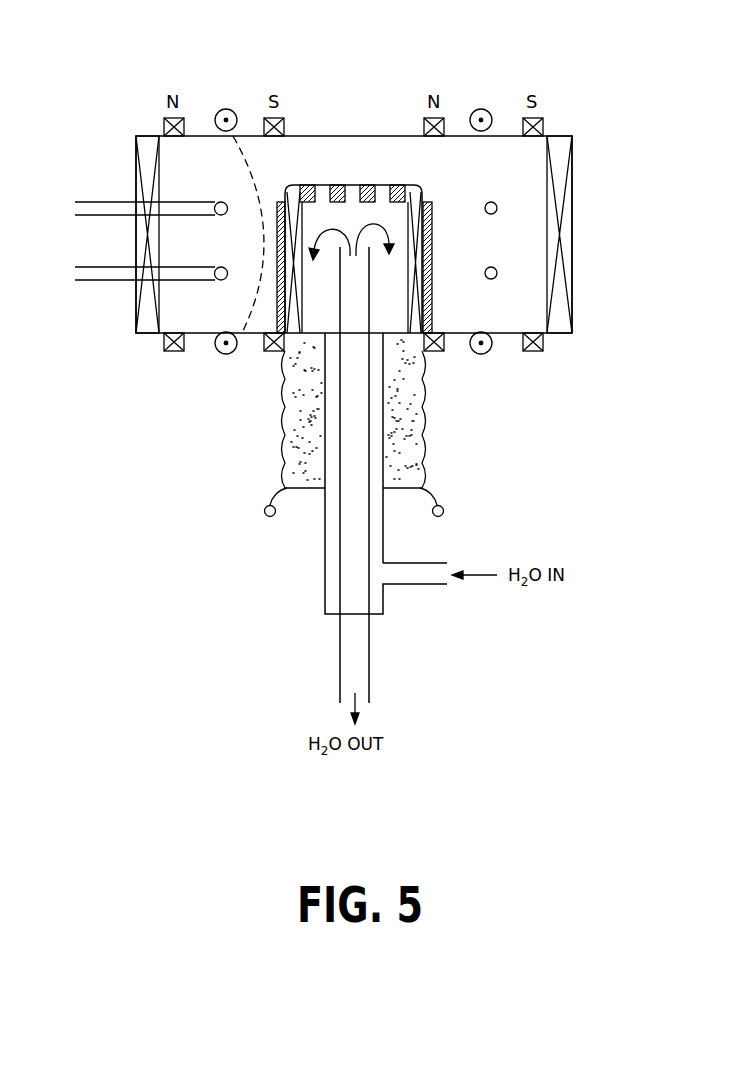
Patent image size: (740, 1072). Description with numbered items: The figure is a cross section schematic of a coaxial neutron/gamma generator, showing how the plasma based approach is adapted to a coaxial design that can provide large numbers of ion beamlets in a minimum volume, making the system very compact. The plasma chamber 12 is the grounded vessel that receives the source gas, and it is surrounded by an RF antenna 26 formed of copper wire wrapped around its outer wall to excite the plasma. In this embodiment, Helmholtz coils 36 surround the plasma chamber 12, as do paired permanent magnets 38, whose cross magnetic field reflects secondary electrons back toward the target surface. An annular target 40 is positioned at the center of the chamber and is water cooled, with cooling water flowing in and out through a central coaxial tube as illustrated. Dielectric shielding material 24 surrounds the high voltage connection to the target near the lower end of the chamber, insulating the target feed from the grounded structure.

The chamber 12 is at (460, 334).
The dielectric shielding material 24 is at (285, 445).
The RF antenna 26 is at (100, 202).
The Helmholtz coils 36 is at (232, 110).
The paired permanent magnets 38 is at (285, 125).
The annular target 40 is at (432, 246).